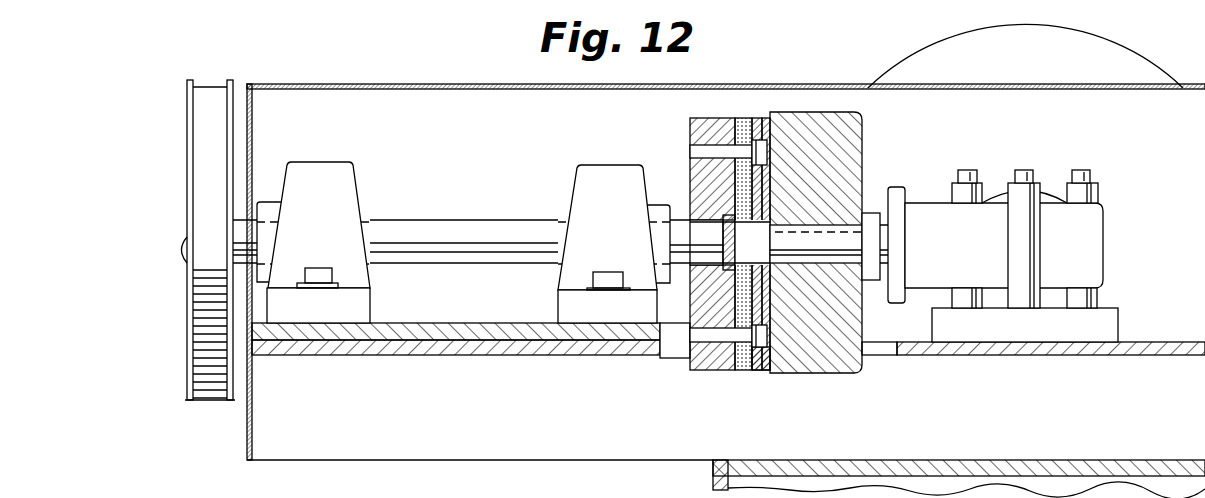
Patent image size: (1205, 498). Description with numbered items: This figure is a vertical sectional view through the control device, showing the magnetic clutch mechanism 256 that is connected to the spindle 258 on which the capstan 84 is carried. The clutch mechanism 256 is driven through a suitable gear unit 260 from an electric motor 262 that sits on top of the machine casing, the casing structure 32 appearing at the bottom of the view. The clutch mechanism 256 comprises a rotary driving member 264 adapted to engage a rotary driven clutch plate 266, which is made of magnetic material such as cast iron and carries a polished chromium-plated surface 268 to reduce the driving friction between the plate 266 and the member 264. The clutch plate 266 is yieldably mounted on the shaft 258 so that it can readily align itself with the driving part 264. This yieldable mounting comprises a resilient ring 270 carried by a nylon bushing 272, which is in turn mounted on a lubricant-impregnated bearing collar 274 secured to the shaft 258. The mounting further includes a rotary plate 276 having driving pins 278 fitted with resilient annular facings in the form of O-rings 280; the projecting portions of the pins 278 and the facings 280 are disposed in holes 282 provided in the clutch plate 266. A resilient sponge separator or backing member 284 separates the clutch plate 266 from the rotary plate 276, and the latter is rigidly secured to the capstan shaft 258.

The base plate 32 is at (925, 479).
The capstan 84 is at (213, 95).
The magnetic clutch mechanism 256 is at (778, 252).
The spindle 258 is at (482, 228).
The gear unit 260 is at (1088, 230).
The electric motor 262 is at (1125, 62).
The rotary driving member 264 is at (850, 168).
The clutch plate 266 is at (757, 118).
The chromium-plated surface 268 is at (768, 118).
The resilient ring 270 is at (775, 302).
The plastic bushing 272 is at (735, 210).
The bearing collar 274 is at (735, 277).
The rotary plate 276 is at (702, 370).
The driving pins 278 is at (723, 148).
The O-rings 280 is at (760, 370).
The holes 282 is at (746, 118).
The sponge separator 284 is at (750, 116).